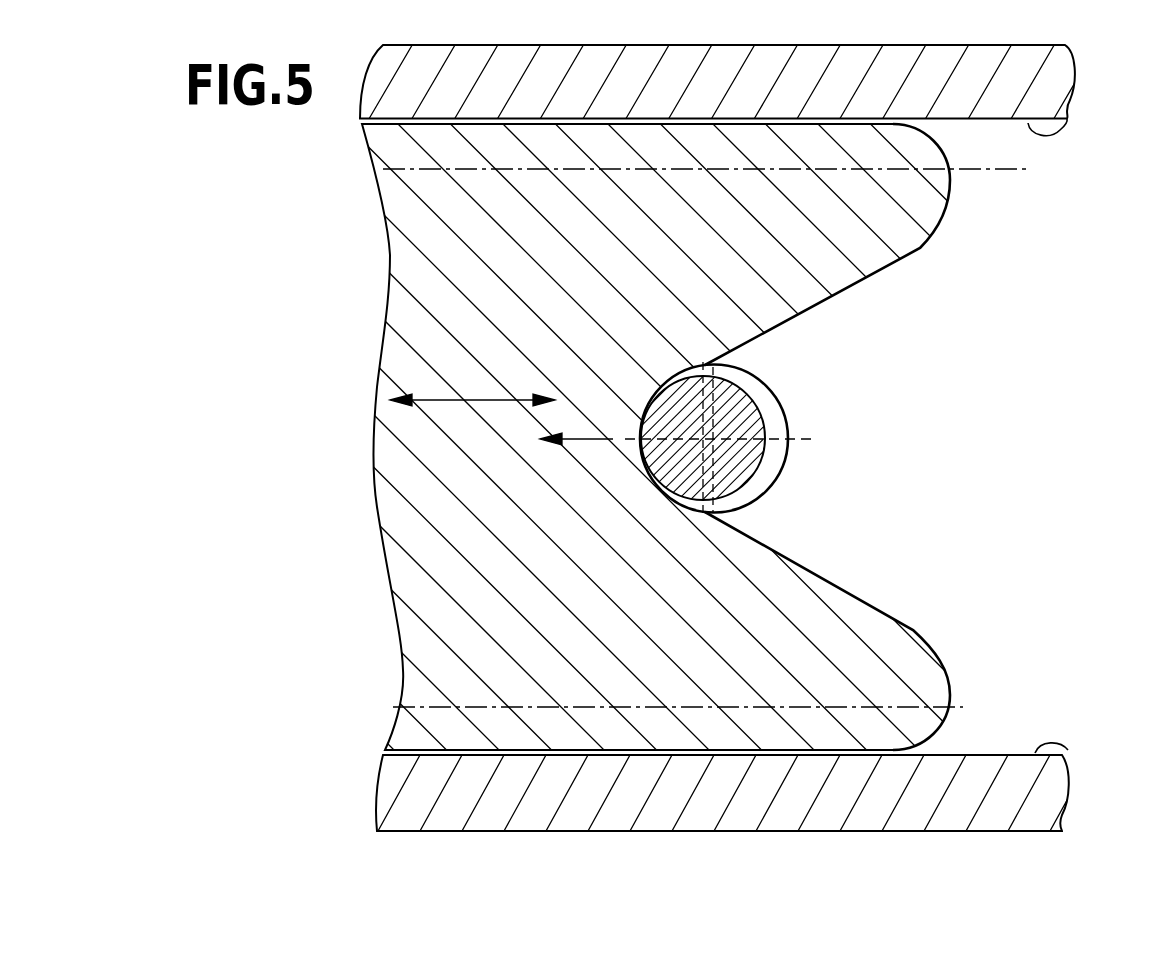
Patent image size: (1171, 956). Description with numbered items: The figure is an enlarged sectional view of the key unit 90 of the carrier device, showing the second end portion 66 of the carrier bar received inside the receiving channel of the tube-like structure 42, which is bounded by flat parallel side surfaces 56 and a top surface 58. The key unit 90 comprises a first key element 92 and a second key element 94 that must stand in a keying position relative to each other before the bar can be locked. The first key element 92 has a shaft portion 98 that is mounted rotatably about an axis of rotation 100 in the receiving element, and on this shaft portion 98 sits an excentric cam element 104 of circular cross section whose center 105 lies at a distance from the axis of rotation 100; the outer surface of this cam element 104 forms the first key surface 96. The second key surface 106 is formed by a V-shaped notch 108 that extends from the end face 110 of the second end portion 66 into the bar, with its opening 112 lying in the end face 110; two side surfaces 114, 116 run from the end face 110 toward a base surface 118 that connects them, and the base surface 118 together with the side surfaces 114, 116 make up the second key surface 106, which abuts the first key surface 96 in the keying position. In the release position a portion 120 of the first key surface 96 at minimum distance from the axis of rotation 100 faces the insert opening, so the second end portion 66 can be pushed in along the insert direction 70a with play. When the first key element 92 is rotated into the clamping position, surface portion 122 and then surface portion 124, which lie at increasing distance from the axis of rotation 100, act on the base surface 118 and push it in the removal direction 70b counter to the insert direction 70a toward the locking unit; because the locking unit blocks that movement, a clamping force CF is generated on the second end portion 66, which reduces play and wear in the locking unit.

The tube-like structure 42 is at (757, 834).
The side surfaces 56 is at (1068, 750).
The top surface 58 is at (1067, 122).
The second end portion 66 is at (467, 423).
The insert direction 70a is at (503, 396).
The removal direction 70b is at (420, 398).
The key unit 90 is at (815, 480).
The first key element 92 is at (737, 413).
The second key element 94 is at (918, 273).
The first key surface 96 is at (781, 520).
The shaft portion 98 is at (757, 420).
The axis of rotation 100 is at (665, 465).
The excentric cam element 104 is at (780, 455).
The center 105 is at (702, 512).
The second key surface 106 is at (898, 287).
The V-shaped notch 108 is at (887, 586).
The end face 110 is at (948, 693).
The opening 112 is at (915, 630).
The side surface of V-shaped notch 114 is at (810, 571).
The side surface of V-shaped notch 116 is at (857, 282).
The base surface 118 is at (665, 405).
The portion of first key surface 120 is at (645, 440).
The surface portion 122 is at (674, 490).
The surface portion 124 is at (743, 518).
The clamping force CF is at (576, 424).